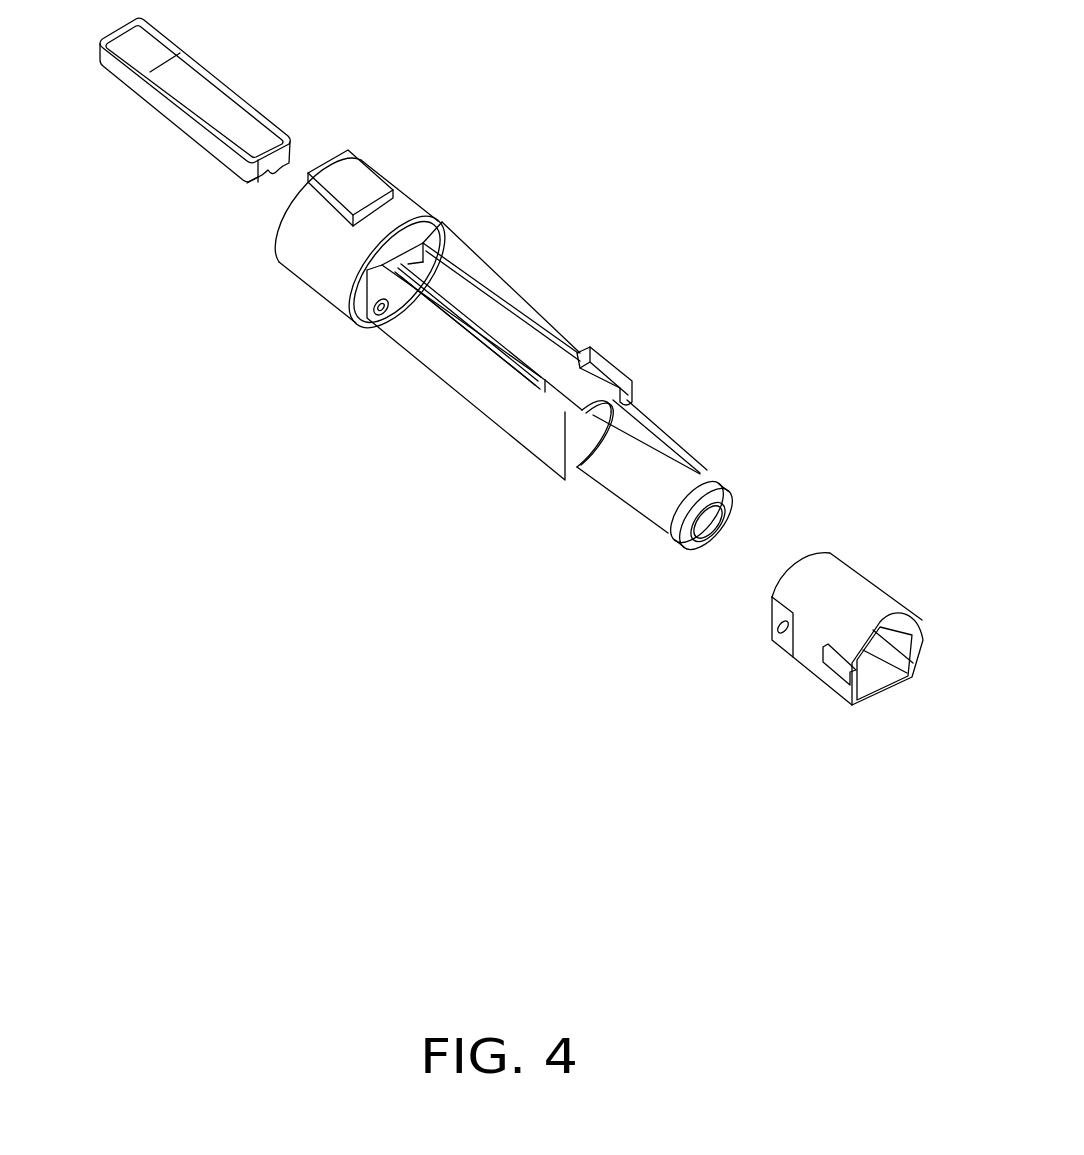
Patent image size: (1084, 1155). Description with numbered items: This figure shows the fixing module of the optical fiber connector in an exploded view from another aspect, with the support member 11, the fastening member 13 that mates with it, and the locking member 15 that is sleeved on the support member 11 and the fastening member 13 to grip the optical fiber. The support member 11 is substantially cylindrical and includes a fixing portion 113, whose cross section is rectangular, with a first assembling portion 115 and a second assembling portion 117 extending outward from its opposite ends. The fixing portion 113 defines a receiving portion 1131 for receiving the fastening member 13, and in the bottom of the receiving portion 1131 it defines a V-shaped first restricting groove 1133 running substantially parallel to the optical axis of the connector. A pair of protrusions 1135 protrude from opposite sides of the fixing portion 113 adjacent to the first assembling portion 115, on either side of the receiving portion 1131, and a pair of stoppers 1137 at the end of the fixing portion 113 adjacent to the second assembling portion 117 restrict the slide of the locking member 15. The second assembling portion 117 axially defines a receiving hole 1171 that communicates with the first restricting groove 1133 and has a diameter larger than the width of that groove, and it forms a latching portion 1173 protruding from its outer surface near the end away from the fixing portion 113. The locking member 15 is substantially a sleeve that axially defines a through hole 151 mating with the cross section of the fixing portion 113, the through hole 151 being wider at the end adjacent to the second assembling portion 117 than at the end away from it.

The support member 11 is at (497, 445).
The fastening member 13 is at (172, 108).
The locking member 15 is at (805, 680).
The fixing portion 113 is at (452, 362).
The first assembling portion 115 is at (306, 255).
The second assembling portion 117 is at (642, 487).
The through hole 151 is at (877, 682).
The receiving portion 1131 is at (512, 318).
The first restricting groove 1133 is at (413, 282).
The protrusions 1135 is at (384, 306).
The stoppers 1137 is at (613, 374).
The receiving hole 1171 is at (708, 523).
The latching portion 1173 is at (717, 474).